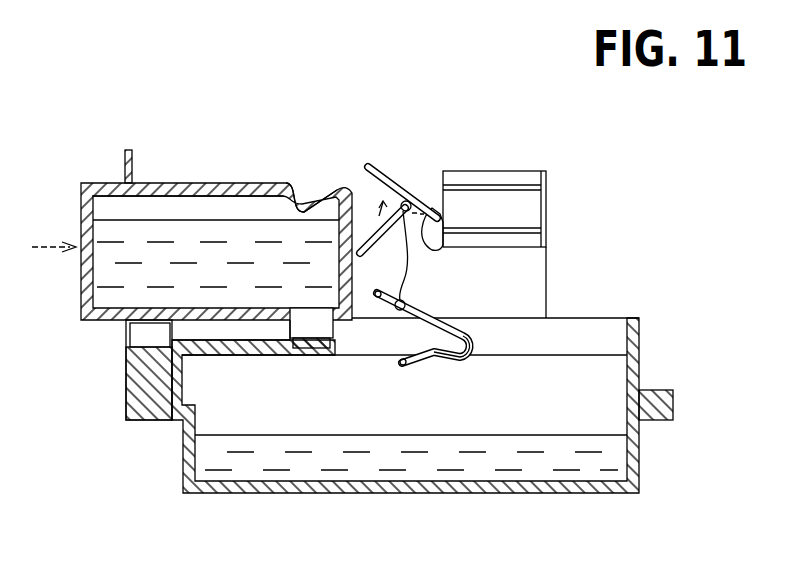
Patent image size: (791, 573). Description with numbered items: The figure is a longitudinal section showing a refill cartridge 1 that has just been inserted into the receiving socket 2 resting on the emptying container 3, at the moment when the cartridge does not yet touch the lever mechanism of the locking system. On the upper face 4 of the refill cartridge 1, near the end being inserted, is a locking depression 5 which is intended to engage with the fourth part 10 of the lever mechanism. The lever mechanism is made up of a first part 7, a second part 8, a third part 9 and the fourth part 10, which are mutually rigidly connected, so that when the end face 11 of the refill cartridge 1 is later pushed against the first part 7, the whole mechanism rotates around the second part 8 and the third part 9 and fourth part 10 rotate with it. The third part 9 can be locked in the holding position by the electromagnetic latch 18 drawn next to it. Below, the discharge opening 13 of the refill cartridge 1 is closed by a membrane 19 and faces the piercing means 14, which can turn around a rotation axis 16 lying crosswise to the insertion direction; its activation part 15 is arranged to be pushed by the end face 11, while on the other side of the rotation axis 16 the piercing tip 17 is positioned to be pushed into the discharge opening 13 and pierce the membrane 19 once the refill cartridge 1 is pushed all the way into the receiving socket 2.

The refill cartridge 1 is at (223, 208).
The receiving socket 2 is at (125, 163).
The emptying container 3 is at (515, 408).
The upper face 4 is at (180, 186).
The locking depression 5 is at (300, 200).
The first part 7 is at (362, 255).
The second part 8 is at (401, 201).
The third part 9 is at (437, 206).
The fourth part 10 is at (366, 166).
The end face 11 is at (341, 267).
The discharge opening 13 is at (280, 358).
The piercing means 14 is at (440, 327).
The activation part 15 is at (375, 300).
The rotation axis 16 is at (407, 305).
The piercing tip 17 is at (410, 365).
The electromagnetic latch 18 is at (441, 205).
The membrane 19 is at (307, 343).